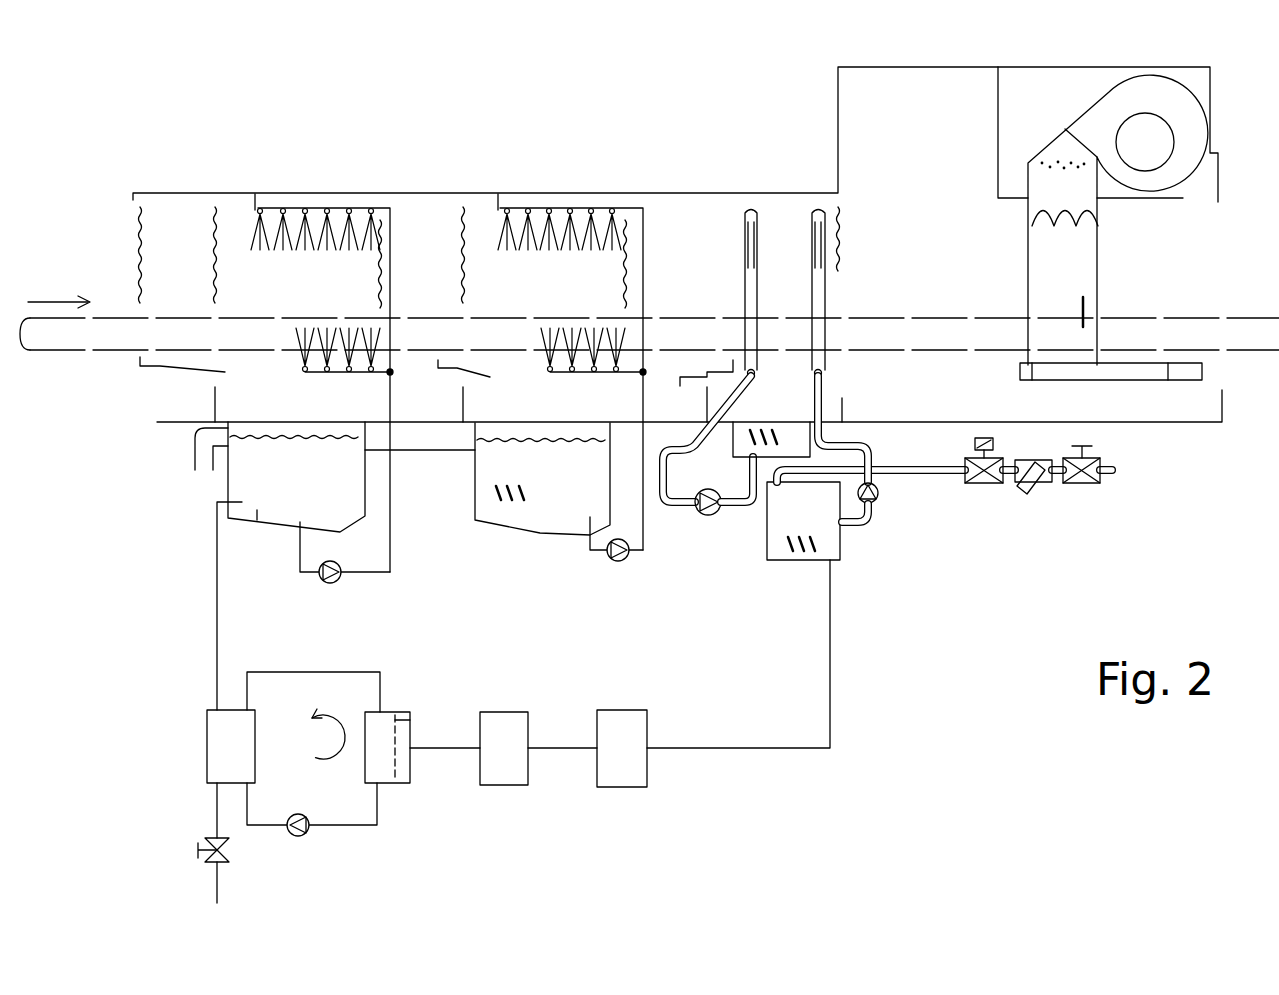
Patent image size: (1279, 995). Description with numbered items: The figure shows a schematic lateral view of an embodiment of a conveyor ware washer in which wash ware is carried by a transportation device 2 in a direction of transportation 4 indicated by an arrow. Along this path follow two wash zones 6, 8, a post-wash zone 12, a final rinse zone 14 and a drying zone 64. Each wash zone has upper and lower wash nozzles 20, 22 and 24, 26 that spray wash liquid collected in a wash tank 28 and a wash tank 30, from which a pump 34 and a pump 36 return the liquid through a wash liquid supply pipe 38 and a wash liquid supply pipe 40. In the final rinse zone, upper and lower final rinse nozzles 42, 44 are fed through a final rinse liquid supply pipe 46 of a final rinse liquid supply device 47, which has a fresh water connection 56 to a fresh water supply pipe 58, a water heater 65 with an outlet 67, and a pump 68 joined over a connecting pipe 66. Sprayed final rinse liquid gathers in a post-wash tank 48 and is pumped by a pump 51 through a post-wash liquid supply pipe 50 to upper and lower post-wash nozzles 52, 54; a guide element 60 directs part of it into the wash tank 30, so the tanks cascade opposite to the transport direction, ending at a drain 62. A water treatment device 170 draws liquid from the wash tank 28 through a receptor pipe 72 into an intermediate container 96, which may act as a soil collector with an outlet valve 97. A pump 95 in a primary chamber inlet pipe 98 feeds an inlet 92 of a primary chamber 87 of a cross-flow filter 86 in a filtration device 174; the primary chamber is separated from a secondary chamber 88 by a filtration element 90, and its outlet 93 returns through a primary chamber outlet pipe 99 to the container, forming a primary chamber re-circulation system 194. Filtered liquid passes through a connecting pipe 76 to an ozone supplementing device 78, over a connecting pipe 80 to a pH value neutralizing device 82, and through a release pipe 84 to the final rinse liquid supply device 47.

The transportation device 2 is at (103, 344).
The direction of transportation 4 is at (68, 302).
The wash zone 6 is at (263, 306).
The wash zone 8 is at (488, 298).
The post-wash zone 12 is at (745, 262).
The final rinse zone 14 is at (808, 290).
The upper wash nozzles 20 is at (310, 207).
The lower wash nozzles 22 is at (308, 372).
The upper wash nozzles 24 is at (553, 207).
The lower wash nozzles 26 is at (552, 370).
The wash tank 28 is at (257, 516).
The wash tank 30 is at (562, 525).
The pump 34 is at (312, 580).
The pump 36 is at (612, 560).
The wash liquid supply pipe 38 is at (347, 578).
The wash liquid supply pipe 40 is at (638, 556).
The upper final rinse nozzle 42 is at (817, 210).
The lower final rinse nozzle 44 is at (823, 372).
The final rinse liquid supply pipe 46 is at (866, 440).
The final rinse liquid supply device 47 is at (935, 517).
The post-wash tank 48 is at (790, 447).
The post-wash liquid supply pipe 50 is at (695, 508).
The pump 51 is at (704, 518).
The upper post-wash nozzle 52 is at (751, 210).
The lower post-wash nozzle 54 is at (753, 374).
The fresh water connection 56 is at (975, 483).
The fresh water supply pipe 58 is at (1112, 472).
The guide element 60 is at (707, 370).
The drain 62 is at (195, 458).
The drying zone 64 is at (898, 95).
The water heater 65 is at (815, 548).
The connecting pipe 66 is at (870, 518).
The outlet 67 is at (798, 502).
The pump 68 is at (880, 490).
The receptor pipe 72 is at (217, 577).
The connecting pipe 76 is at (437, 752).
The ozone supplementing device 78 is at (512, 786).
The connecting pipe 80 is at (556, 750).
The pH value neutralizing device 82 is at (625, 788).
The release pipe 84 is at (753, 750).
The cross-flow filter 86 is at (407, 785).
The primary chamber 87 is at (368, 737).
The secondary chamber 88 is at (427, 748).
The filtration element 90 is at (403, 743).
The inlet 92 is at (380, 788).
The outlet 93 is at (382, 712).
The pump 95 is at (303, 836).
The intermediate container 96 is at (207, 728).
The outlet valve 97 is at (207, 866).
The primary chamber inlet pipe 98 is at (347, 827).
The primary chamber outlet pipe 99 is at (273, 672).
The water treatment device 170 is at (165, 773).
The filtration device 174 is at (455, 847).
The primary chamber re-circulation system 194 is at (315, 734).